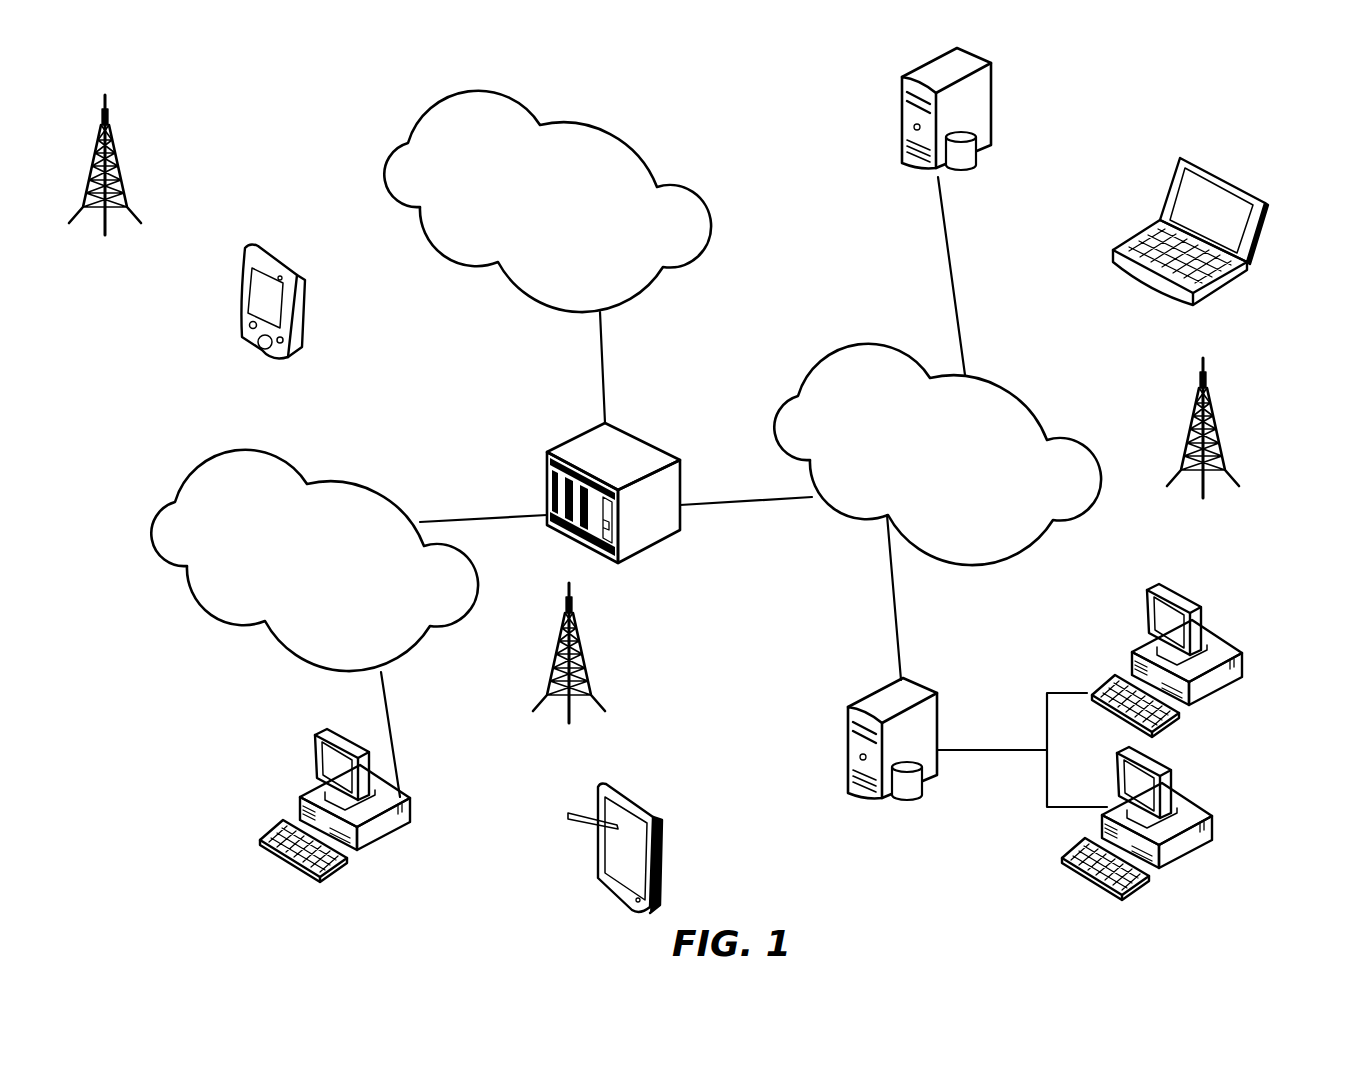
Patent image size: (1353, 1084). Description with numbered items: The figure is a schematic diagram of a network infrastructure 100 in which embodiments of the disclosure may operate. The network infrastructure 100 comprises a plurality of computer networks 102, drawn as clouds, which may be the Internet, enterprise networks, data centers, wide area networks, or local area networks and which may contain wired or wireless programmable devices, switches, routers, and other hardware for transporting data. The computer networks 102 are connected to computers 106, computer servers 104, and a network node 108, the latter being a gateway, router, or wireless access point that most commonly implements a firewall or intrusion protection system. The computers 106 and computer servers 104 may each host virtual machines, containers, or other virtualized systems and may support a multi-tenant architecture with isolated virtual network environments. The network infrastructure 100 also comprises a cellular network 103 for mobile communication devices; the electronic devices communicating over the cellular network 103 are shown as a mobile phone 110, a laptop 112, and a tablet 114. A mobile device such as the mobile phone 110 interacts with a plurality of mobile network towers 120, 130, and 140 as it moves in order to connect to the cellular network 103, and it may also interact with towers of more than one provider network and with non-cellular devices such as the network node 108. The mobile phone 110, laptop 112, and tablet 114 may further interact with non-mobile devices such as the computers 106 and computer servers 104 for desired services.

The network infrastructure 100 is at (1089, 152).
The computer networks 102 is at (293, 470).
The cellular network 103 is at (597, 130).
The computer server 104 is at (848, 730).
The computer 106 is at (410, 800).
The network node 108 is at (638, 437).
The mobile phone 110 is at (282, 257).
The laptop 112 is at (1232, 185).
The tablet 114 is at (642, 797).
The mobile network tower 120 is at (569, 672).
The mobile network tower 130 is at (1203, 445).
The mobile network tower 140 is at (105, 182).